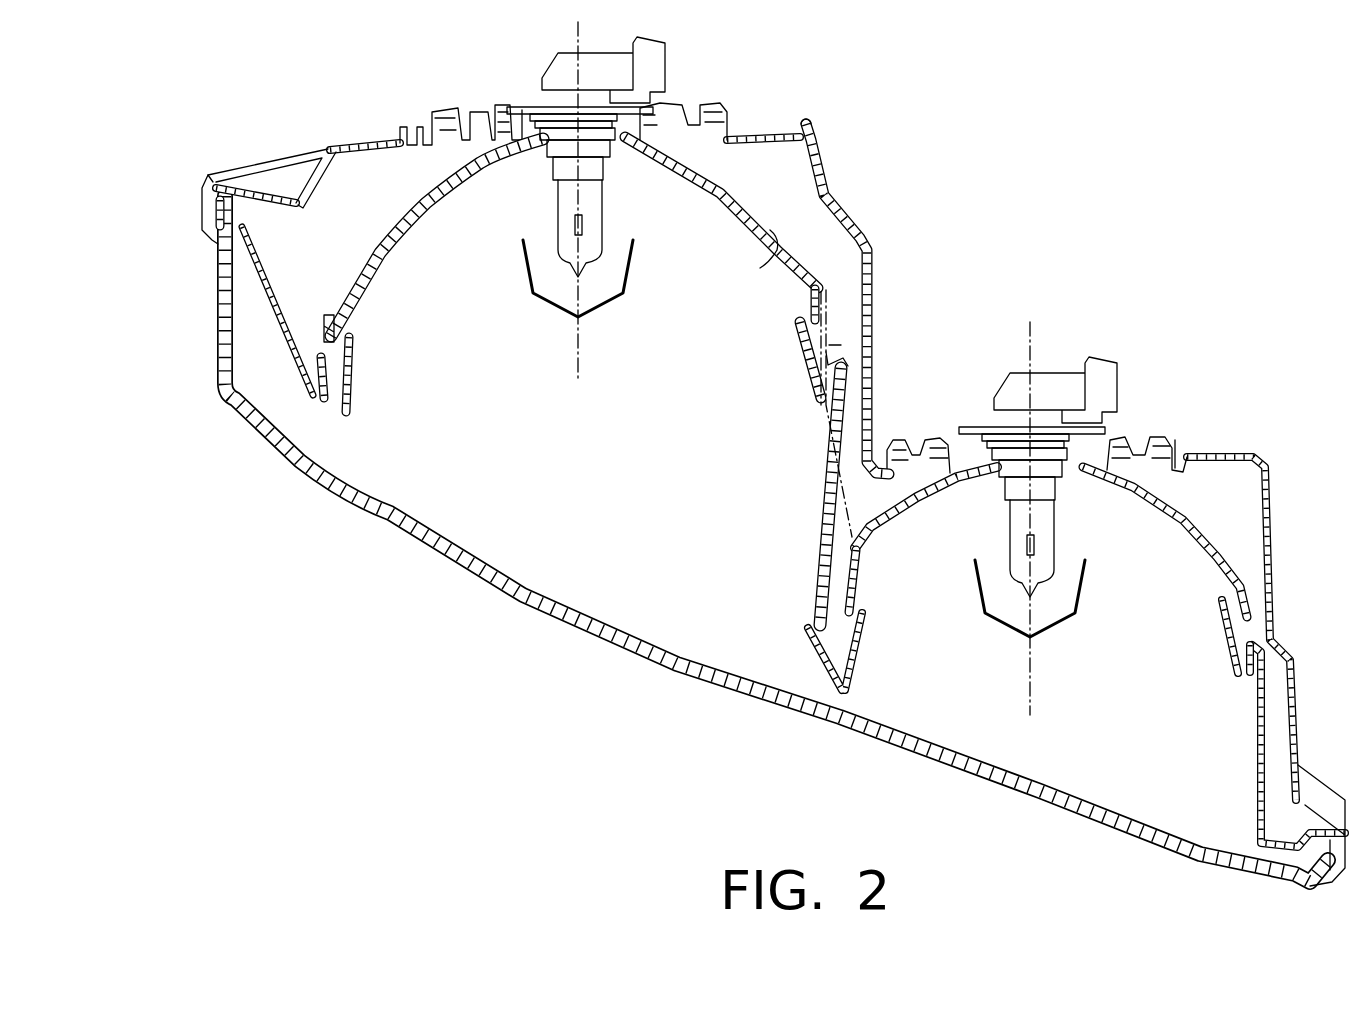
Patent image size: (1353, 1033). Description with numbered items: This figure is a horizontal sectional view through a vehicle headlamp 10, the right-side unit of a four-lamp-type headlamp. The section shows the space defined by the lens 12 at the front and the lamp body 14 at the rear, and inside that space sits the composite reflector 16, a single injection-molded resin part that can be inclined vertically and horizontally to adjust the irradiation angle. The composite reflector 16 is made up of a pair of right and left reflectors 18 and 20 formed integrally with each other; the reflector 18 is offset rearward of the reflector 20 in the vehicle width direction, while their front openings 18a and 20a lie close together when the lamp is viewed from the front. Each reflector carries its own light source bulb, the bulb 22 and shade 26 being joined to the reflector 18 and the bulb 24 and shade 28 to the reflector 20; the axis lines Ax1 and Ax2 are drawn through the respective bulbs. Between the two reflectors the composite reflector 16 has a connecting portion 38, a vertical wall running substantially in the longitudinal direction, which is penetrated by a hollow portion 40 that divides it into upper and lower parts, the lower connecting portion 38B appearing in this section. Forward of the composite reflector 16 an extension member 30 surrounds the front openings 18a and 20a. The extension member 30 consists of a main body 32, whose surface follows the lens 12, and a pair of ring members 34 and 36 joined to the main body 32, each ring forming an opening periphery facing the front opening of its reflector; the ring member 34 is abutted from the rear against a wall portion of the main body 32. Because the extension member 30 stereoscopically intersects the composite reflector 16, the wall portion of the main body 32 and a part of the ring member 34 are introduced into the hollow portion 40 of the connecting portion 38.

The headlamp 10 is at (1095, 203).
The lens 12 is at (612, 655).
The lamp body 14 is at (878, 268).
The composite reflector 16 is at (793, 193).
The reflector 18 is at (370, 240).
The front opening 18a is at (810, 300).
The reflector 20 is at (1200, 505).
The front opening 20a is at (858, 572).
The light source bulb 22 is at (600, 218).
The light source bulb 24 is at (1041, 477).
The shade 26 is at (522, 258).
The shade 28 is at (1000, 598).
The extension member 30 is at (817, 508).
The main body 32 is at (807, 533).
The ring member 34 is at (797, 370).
The ring member 36 is at (863, 657).
The connecting portion 38 is at (839, 413).
The lower connecting portion 38B is at (845, 327).
The hollow portion 40 is at (830, 343).
The first optical axis Ax1 is at (582, 376).
The second optical axis Ax2 is at (1033, 683).